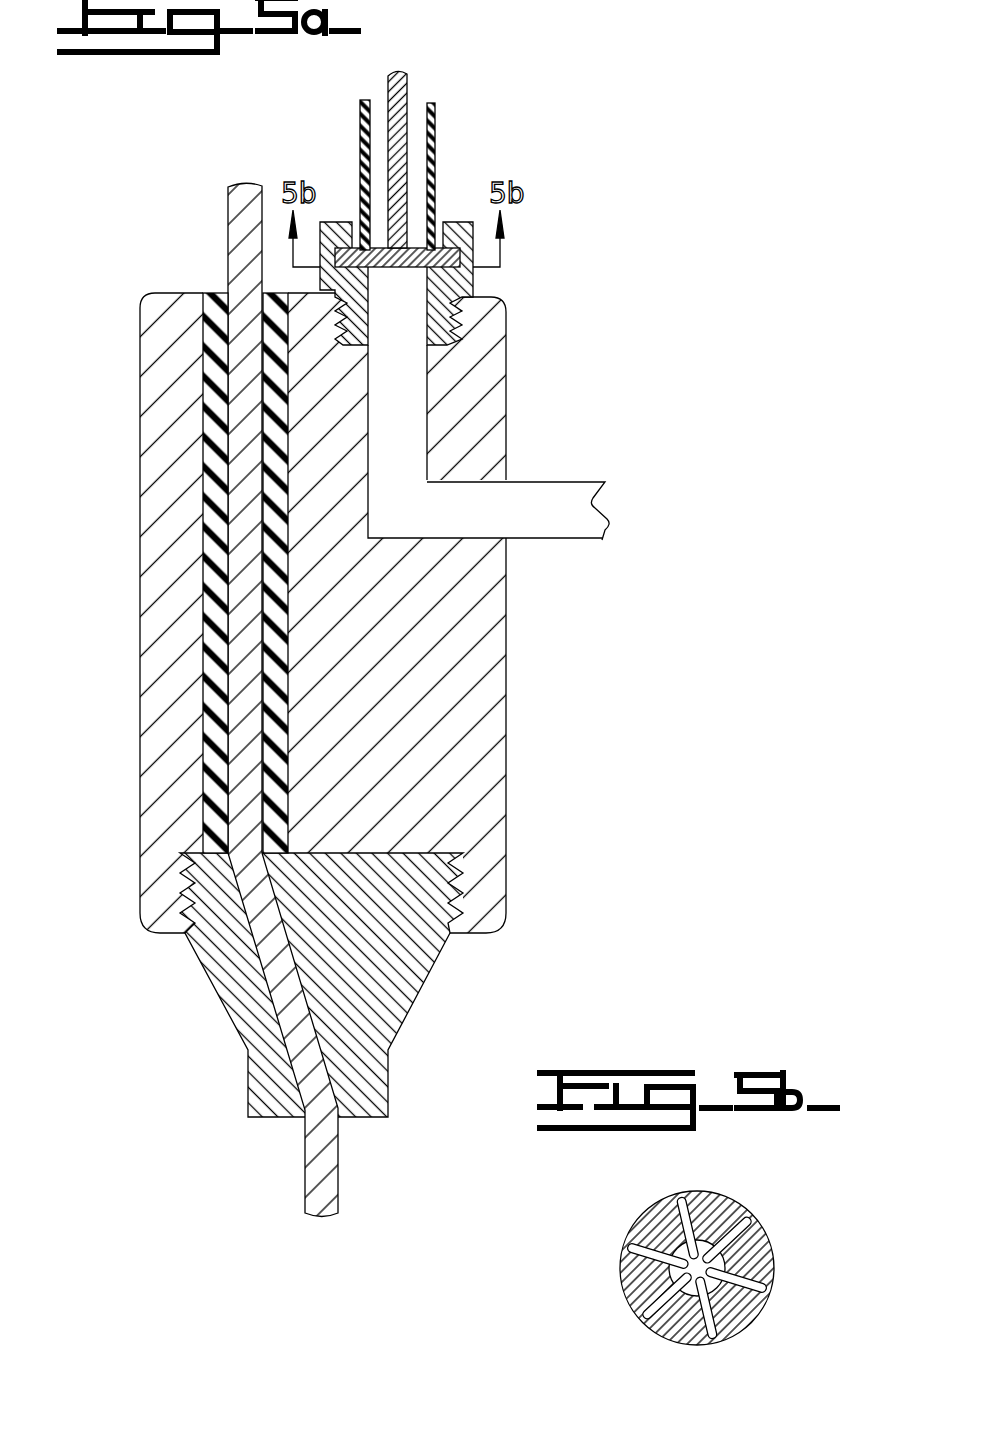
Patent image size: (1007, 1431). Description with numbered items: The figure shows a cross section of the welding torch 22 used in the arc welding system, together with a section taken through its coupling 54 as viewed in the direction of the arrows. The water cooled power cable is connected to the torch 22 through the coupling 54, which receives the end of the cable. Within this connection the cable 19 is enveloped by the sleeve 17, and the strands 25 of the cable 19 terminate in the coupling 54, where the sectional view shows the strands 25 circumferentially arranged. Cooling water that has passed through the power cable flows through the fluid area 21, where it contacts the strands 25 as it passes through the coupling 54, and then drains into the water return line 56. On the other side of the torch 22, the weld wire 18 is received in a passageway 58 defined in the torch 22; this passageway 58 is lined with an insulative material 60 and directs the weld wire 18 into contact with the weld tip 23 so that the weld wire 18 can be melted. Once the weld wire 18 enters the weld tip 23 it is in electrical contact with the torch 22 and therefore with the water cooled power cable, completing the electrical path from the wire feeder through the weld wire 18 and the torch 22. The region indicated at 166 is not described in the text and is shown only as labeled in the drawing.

In FIG. 5A, the sleeve 17 is at (437, 148).
In FIG. 5A, the weld wire 18 is at (227, 237).
In FIG. 5A, the cable 19 is at (406, 75).
In FIG. 5A, the fluid area 21 is at (372, 104).
In FIG. 5B, the fluid area 21 is at (684, 1236).
In FIG. 5A, the torch 22 is at (138, 548).
In FIG. 5A, the weld tip 23 is at (403, 1026).
In FIG. 5A, the strands 25 is at (352, 222).
In FIG. 5B, the strands 25 is at (641, 1253).
In FIG. 5A, the coupling 54 is at (474, 290).
In FIG. 5B, the coupling 54 is at (758, 1243).
In FIG. 5A, the water return line 56 is at (574, 482).
In FIG. 5A, the passageway 58 is at (233, 305).
In FIG. 5A, the insulative material 60 is at (203, 448).
In FIG. 5A, the electrode tip region 166 is at (458, 122).